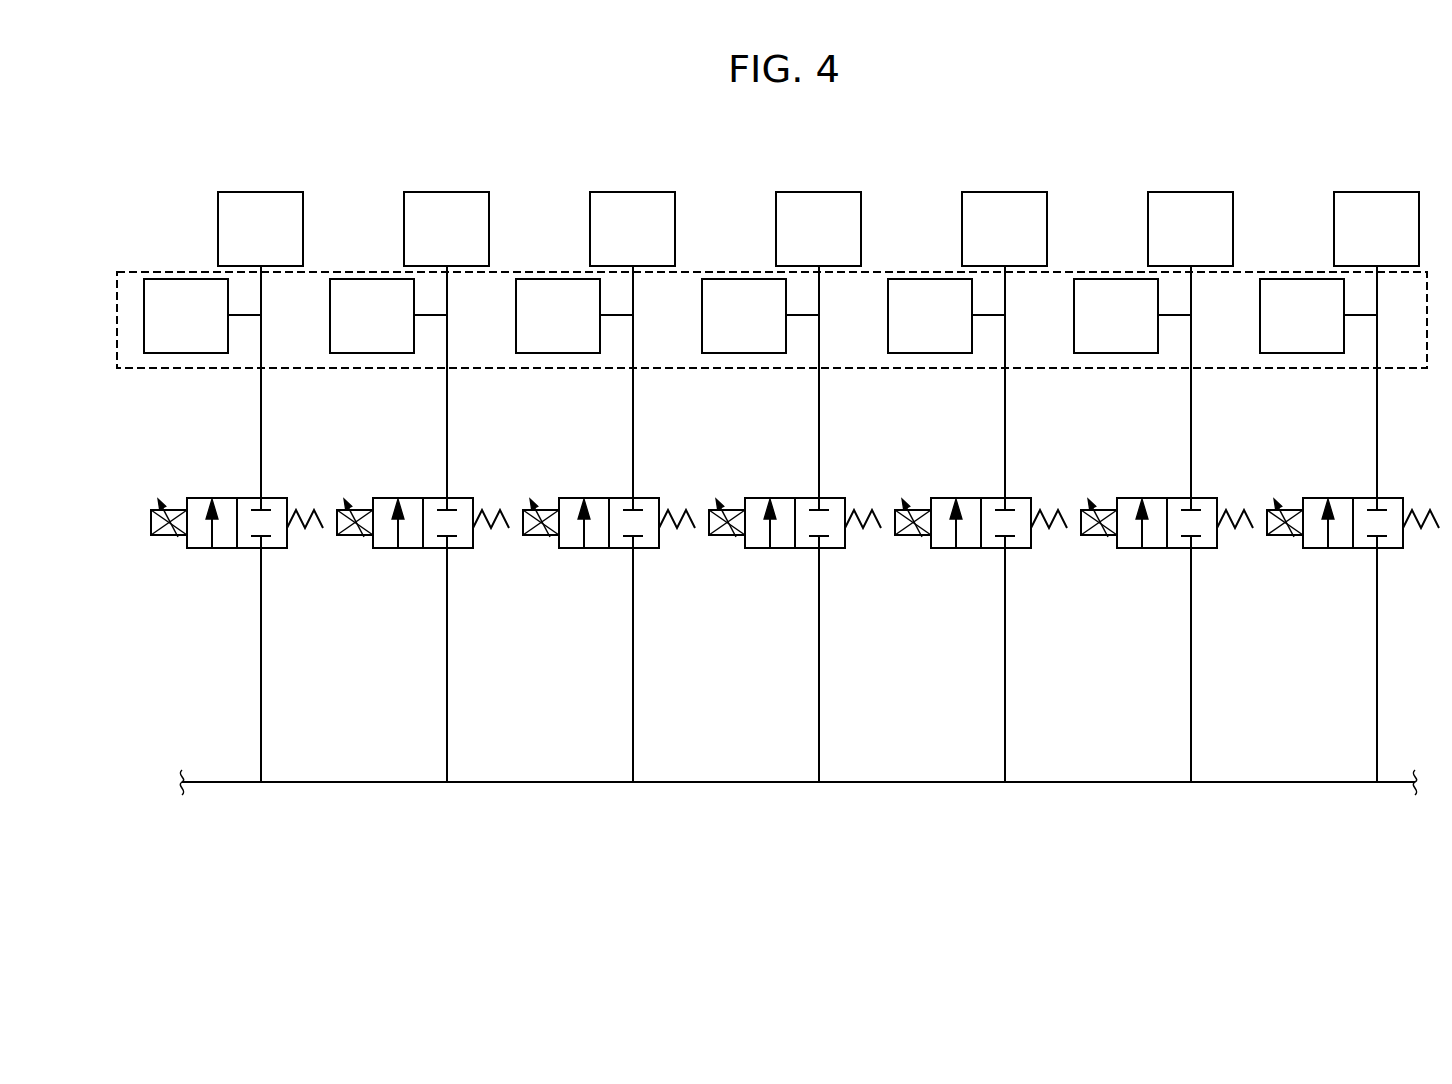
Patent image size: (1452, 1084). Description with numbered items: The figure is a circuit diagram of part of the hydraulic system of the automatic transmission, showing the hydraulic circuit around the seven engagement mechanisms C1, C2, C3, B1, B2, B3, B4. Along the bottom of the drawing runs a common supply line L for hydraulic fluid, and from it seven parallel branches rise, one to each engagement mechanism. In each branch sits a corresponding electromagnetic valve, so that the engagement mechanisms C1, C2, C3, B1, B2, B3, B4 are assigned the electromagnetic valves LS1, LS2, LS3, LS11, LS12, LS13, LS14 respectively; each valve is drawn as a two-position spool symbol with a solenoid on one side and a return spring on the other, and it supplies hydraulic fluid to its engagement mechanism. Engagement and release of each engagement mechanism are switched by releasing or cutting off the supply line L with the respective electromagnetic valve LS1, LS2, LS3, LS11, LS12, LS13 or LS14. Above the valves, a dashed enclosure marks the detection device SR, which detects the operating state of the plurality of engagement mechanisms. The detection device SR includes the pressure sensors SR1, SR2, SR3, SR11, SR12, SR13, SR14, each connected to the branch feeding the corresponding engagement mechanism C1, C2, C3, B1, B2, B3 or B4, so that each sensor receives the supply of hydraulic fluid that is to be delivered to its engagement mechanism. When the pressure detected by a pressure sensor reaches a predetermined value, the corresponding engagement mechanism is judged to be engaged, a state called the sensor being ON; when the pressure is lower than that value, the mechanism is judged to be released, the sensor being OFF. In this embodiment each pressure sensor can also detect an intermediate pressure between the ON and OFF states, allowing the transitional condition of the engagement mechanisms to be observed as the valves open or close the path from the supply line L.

The engagement mechanism C1 is at (260, 229).
The engagement mechanism C2 is at (446, 229).
The engagement mechanism C3 is at (632, 229).
The engagement mechanism B1 is at (818, 229).
The engagement mechanism B2 is at (1004, 229).
The engagement mechanism B3 is at (1190, 229).
The engagement mechanism B4 is at (1376, 229).
The pressure sensor SR1 is at (202, 316).
The pressure sensor SR2 is at (388, 316).
The pressure sensor SR3 is at (574, 316).
The pressure sensor SR11 is at (760, 316).
The pressure sensor SR12 is at (946, 316).
The pressure sensor SR13 is at (1132, 316).
The pressure sensor SR14 is at (1318, 316).
The detection device SR is at (882, 368).
The electromagnetic valve LS1 is at (247, 549).
The electromagnetic valve LS2 is at (423, 550).
The electromagnetic valve LS3 is at (609, 550).
The electromagnetic valve LS11 is at (795, 550).
The electromagnetic valve LS12 is at (981, 550).
The electromagnetic valve LS13 is at (1167, 550).
The electromagnetic valve LS14 is at (1353, 550).
The supply line L is at (410, 782).